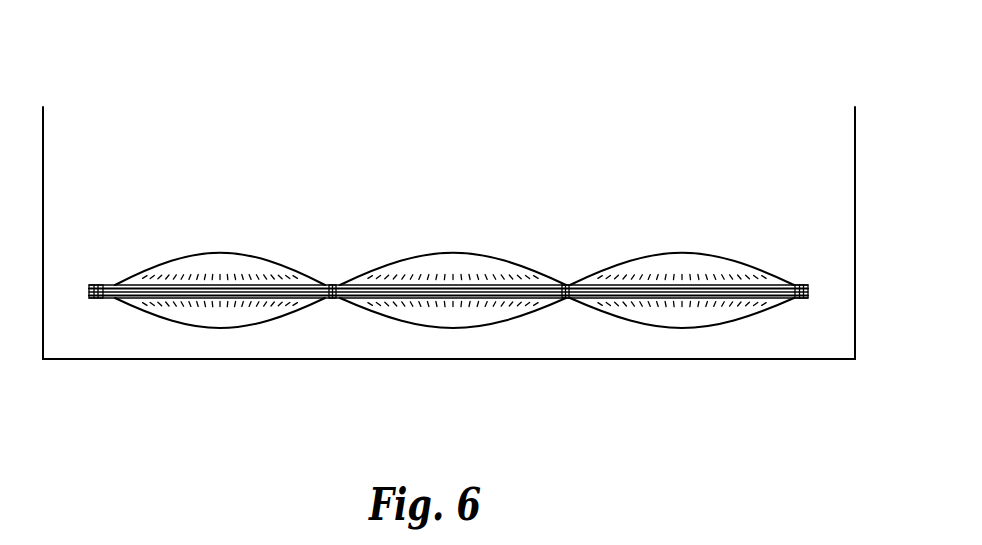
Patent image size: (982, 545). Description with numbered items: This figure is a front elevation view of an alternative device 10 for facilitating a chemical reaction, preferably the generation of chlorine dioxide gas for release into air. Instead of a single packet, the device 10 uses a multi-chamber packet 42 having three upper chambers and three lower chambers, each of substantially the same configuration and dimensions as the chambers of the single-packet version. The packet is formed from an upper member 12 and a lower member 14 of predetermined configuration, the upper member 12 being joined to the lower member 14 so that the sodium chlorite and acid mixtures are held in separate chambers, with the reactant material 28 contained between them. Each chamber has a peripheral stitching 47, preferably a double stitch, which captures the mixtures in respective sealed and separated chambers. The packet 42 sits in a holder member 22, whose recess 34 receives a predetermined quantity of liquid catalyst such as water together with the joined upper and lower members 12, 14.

The device 10 is at (632, 390).
The upper member 12 is at (251, 255).
The lower member 14 is at (275, 318).
The holder member 22 is at (143, 360).
The expandable body / filler 28 is at (197, 258).
The recess 34 is at (210, 115).
The multi-chamber packet 42 is at (592, 136).
The peripheral stitching 47 is at (101, 285).